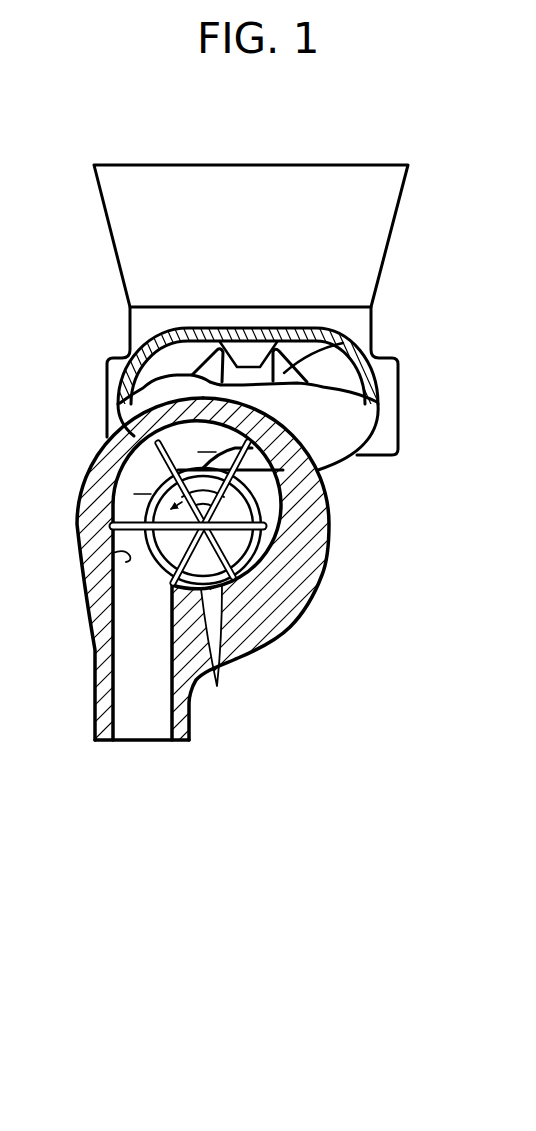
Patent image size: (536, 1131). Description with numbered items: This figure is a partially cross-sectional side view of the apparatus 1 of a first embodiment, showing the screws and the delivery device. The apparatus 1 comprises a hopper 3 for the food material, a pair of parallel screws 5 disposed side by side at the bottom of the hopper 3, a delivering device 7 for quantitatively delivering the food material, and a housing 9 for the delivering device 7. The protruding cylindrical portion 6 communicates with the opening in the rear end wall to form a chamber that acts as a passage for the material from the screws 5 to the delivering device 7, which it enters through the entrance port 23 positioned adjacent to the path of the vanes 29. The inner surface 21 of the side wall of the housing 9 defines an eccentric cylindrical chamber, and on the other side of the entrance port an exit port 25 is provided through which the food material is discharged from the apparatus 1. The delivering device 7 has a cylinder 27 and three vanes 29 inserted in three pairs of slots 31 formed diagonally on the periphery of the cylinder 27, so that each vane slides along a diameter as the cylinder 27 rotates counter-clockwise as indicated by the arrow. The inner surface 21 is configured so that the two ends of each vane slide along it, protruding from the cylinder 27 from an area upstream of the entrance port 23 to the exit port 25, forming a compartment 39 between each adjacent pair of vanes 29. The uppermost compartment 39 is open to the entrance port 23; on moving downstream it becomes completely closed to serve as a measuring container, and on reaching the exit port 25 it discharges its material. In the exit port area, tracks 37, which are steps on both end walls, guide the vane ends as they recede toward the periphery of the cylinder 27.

The apparatus 1 is at (394, 123).
The hopper 3 is at (393, 218).
The screw 5 is at (288, 370).
The protruding cylindrical portion 6 is at (320, 332).
The delivering device 7 is at (300, 437).
The housing 9 is at (331, 517).
The inner surface 21 is at (293, 497).
The entrance port 23 is at (190, 443).
The exit port 25 is at (140, 741).
The cylinder 27 is at (262, 568).
The vanes 29 is at (110, 523).
The slots 31 is at (219, 651).
The tracks 37 is at (86, 565).
The compartment 39 is at (96, 483).